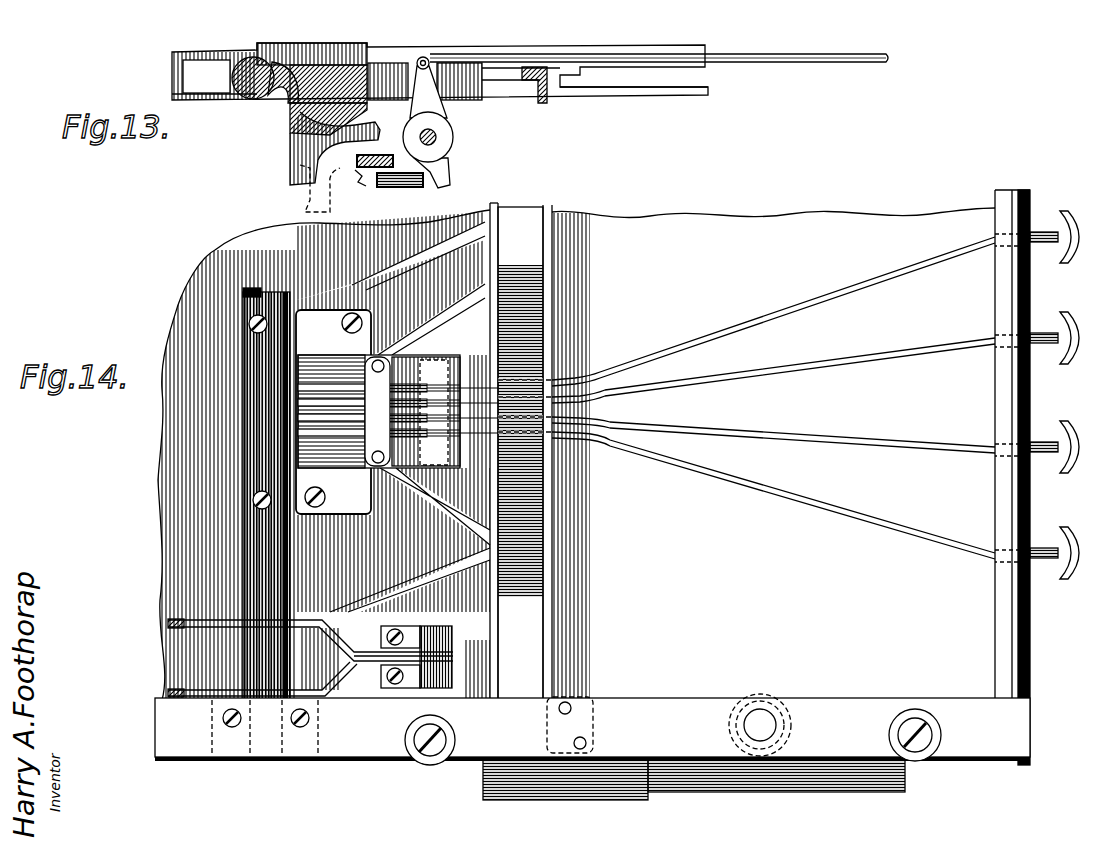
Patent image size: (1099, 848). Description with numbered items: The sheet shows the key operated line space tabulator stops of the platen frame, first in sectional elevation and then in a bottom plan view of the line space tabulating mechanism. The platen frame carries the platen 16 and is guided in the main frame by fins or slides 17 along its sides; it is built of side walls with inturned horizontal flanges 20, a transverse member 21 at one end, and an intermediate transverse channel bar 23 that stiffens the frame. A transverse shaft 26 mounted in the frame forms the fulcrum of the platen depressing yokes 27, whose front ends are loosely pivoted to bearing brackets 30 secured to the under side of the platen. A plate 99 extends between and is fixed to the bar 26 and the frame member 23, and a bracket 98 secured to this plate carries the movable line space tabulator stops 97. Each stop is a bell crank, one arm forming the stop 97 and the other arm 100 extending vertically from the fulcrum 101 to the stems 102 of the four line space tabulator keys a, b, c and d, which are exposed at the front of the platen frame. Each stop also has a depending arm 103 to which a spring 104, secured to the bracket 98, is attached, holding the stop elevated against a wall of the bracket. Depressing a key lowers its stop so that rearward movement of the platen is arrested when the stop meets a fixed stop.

In FIG. 14, the platen 16 is at (842, 585).
In FIG. 14, the fins or slides 17 is at (905, 782).
In FIG. 13, the inturned horizontal flanges 20 is at (672, 95).
In FIG. 14, the inturned horizontal flanges 20 is at (868, 692).
In FIG. 14, the transverse member 21 is at (995, 307).
In FIG. 13, the intermediate transverse channel bar 23 is at (546, 103).
In FIG. 14, the intermediate transverse channel bar 23 is at (545, 243).
In FIG. 13, the transverse shaft 26 is at (252, 62).
In FIG. 14, the transverse shaft 26 is at (270, 295).
In FIG. 14, the platen depressing yokes 27 is at (340, 622).
In FIG. 14, the bearing brackets 30 is at (455, 650).
In FIG. 13, the movable line space tabulator stops 97 is at (295, 165).
In FIG. 14, the movable line space tabulator stops 97 is at (352, 430).
In FIG. 13, the bracket 98 is at (290, 118).
In FIG. 13, the plate 99 is at (350, 65).
In FIG. 14, the plate 99 is at (333, 412).
In FIG. 13, the arm 100 is at (432, 70).
In FIG. 13, the fulcrum 101 is at (437, 137).
In FIG. 13, the stems 102 is at (790, 54).
In FIG. 14, the stems 102 is at (768, 320).
In FIG. 13, the depending arm 103 is at (398, 165).
In FIG. 14, the depending arm 103 is at (433, 470).
In FIG. 13, the spring 104 is at (389, 190).
In FIG. 14, the spring 104 is at (404, 386).
In FIG. 14, the line space tabulator key a is at (1058, 237).
In FIG. 14, the line space tabulator key b is at (1058, 338).
In FIG. 14, the line space tabulator key c is at (1058, 447).
In FIG. 14, the line space tabulator key d is at (1059, 553).